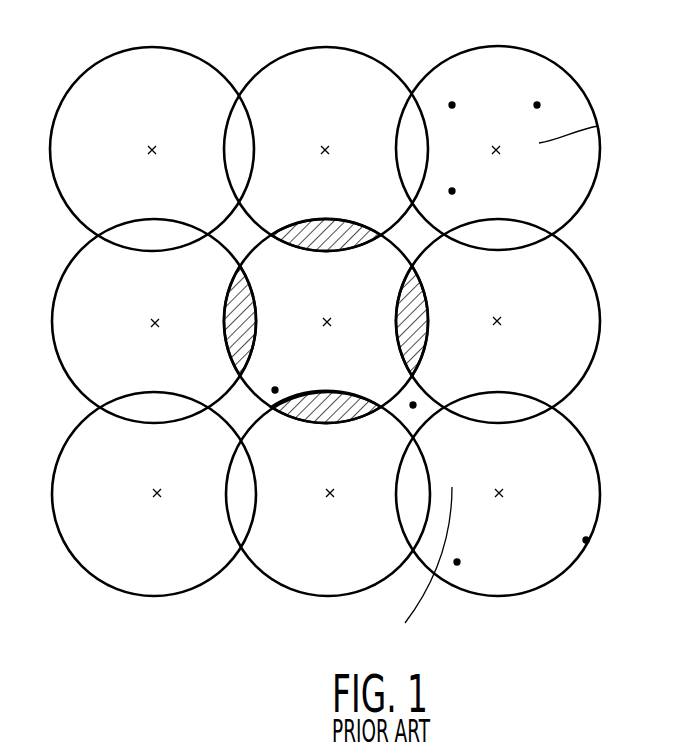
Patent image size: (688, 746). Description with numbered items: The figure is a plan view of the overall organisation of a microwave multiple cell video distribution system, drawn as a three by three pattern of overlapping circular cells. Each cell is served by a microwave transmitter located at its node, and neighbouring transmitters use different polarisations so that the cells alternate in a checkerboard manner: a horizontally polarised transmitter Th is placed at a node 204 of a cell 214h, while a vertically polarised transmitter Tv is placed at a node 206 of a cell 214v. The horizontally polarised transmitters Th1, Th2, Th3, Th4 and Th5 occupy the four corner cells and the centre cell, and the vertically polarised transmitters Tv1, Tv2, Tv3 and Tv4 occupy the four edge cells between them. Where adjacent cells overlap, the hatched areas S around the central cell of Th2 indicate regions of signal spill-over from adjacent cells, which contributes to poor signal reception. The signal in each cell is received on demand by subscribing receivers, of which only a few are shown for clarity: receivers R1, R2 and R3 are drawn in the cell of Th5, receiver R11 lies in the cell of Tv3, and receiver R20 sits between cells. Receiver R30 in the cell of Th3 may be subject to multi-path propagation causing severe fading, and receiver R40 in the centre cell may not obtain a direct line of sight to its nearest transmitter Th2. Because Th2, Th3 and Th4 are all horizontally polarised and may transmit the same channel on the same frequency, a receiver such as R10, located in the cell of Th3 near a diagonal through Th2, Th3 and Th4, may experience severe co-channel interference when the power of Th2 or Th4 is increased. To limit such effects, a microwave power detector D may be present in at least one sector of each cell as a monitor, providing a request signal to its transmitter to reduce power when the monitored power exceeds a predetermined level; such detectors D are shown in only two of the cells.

The cell with horizontally polarised transmitter 214h is at (75, 82).
The cell with vertically polarised transmitter 214v is at (263, 68).
The node of horizontal-polarisation cell 204 is at (147, 151).
The node of vertical-polarisation cell 206 is at (320, 151).
The hatched spill-over area S is at (233, 302).
The microwave power detector D is at (598, 126).
The subscribing receiver R1 is at (538, 91).
The subscribing receiver R2 is at (452, 91).
The subscribing receiver R3 is at (468, 189).
The receiver subject to co-channel interference R10 is at (586, 540).
The subscribing receiver R11 is at (561, 320).
The subscribing receiver R20 is at (413, 405).
The receiver subject to multi-path fading R30 is at (457, 565).
The receiver without direct line of sight R40 is at (276, 388).
The horizontally polarised transmitter Th1 is at (152, 471).
The horizontally polarised transmitter Th2 is at (326, 321).
The horizontally polarised transmitter Th3 is at (498, 471).
The horizontally polarised transmitter Th4 is at (151, 124).
The horizontally polarised transmitter Th5 is at (495, 124).
The vertically polarised transmitter Tv1 is at (326, 471).
The vertically polarised transmitter Tv2 is at (152, 299).
The vertically polarised transmitter Tv3 is at (496, 299).
The vertically polarised transmitter Tv4 is at (318, 124).